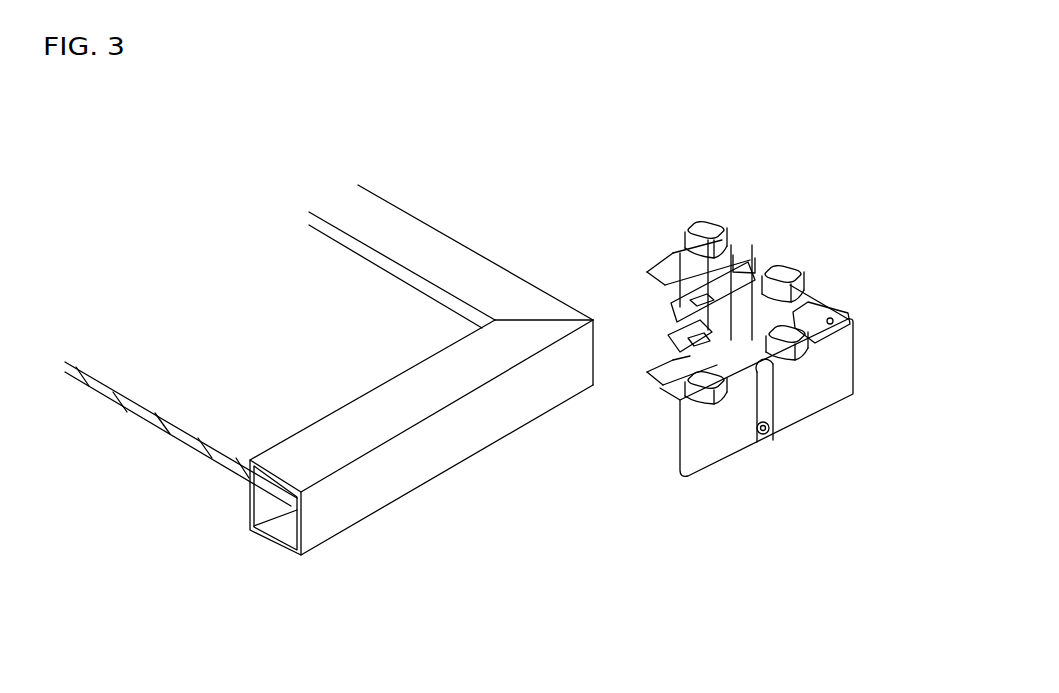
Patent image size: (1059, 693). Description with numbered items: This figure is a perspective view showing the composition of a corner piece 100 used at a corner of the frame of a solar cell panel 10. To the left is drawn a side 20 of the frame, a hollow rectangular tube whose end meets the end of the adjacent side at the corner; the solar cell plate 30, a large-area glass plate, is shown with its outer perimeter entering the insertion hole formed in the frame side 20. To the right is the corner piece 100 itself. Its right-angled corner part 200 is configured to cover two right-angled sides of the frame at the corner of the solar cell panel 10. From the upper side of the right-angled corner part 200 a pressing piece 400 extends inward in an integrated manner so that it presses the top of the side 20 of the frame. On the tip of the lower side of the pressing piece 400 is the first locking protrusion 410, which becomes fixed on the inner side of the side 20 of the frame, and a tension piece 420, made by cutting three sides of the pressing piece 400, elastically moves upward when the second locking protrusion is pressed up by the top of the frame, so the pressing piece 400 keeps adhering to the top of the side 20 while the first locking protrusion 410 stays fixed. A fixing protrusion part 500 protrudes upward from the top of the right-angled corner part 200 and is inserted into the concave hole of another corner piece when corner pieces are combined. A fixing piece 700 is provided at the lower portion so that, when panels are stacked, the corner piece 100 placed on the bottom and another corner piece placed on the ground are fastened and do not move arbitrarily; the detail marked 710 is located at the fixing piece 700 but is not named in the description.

The solar cell panel 10 is at (388, 507).
The side of the frame 20 is at (375, 207).
The solar cell plate 30 is at (165, 427).
The corner piece 100 is at (735, 328).
The right-angled corner part 200 is at (718, 452).
The pressing piece 400 is at (668, 302).
The first locking protrusion 410 is at (672, 322).
The tension piece 420 is at (683, 349).
The fixing protrusion part 500 is at (790, 272).
The fixing piece 700 is at (773, 430).
The boss 710 is at (758, 438).